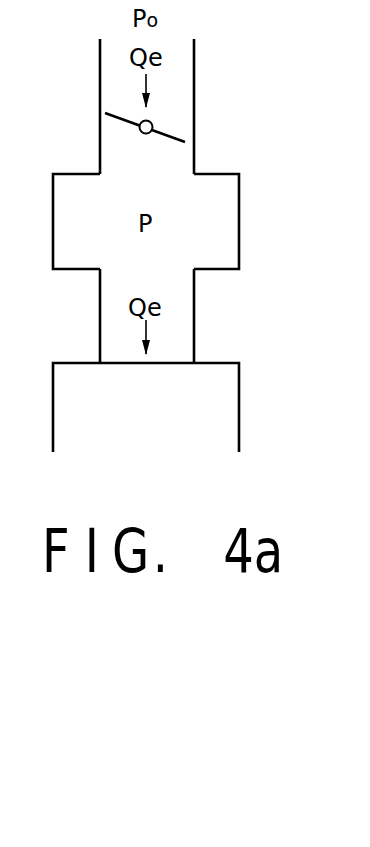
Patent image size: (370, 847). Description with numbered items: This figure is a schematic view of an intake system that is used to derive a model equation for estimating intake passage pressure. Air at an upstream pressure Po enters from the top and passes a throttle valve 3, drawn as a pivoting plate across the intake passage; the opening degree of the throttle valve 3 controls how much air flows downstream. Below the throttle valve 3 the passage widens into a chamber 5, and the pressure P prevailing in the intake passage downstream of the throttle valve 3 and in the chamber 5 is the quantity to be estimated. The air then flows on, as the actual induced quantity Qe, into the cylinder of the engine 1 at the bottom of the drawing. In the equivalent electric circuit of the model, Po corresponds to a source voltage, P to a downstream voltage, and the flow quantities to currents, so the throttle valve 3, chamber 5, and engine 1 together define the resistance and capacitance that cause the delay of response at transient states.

The engine 1 is at (233, 422).
The throttle valve 3 is at (170, 128).
The chamber 5 is at (62, 178).